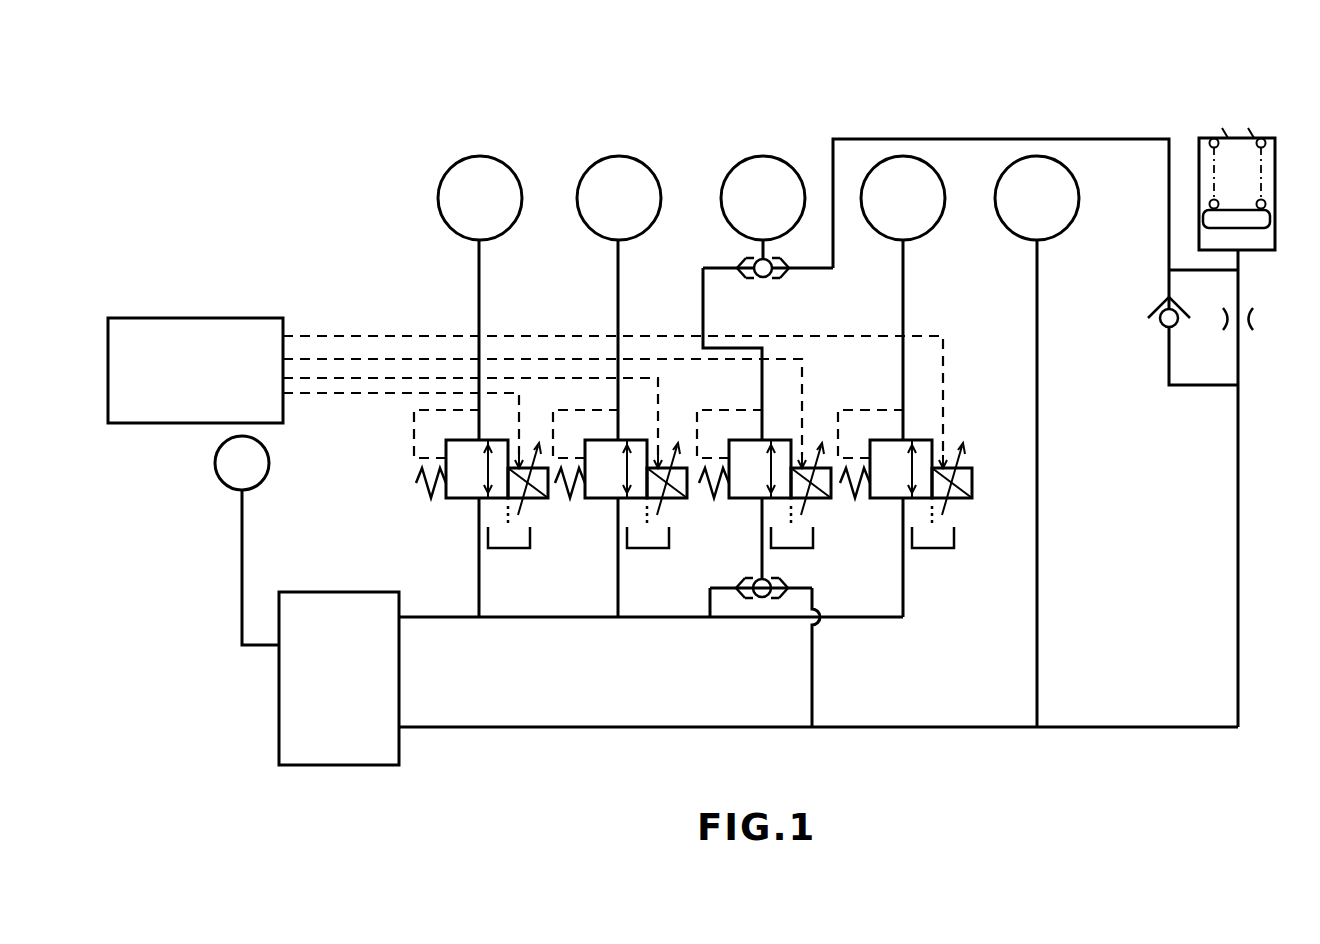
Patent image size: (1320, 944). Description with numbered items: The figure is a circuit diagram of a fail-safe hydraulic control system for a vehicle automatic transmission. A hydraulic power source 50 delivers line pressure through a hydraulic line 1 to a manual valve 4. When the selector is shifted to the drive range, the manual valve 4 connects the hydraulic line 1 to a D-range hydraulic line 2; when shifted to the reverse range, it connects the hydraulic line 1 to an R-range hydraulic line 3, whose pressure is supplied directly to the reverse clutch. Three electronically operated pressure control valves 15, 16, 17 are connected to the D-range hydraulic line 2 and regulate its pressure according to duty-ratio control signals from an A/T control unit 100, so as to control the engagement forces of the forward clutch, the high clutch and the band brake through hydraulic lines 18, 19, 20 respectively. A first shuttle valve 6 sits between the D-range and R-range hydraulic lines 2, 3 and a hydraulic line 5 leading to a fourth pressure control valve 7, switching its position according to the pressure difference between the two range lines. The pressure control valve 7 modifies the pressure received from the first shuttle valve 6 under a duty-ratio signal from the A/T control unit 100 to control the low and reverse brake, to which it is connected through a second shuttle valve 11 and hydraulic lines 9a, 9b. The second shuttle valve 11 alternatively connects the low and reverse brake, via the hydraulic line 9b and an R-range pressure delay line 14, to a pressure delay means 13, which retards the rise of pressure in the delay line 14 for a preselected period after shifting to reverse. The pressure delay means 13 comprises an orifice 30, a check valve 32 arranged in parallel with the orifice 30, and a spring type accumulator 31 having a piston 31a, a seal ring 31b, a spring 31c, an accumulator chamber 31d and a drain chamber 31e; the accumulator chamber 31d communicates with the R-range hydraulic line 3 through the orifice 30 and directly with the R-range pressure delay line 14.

The hydraulic line 1 is at (242, 536).
The D-range hydraulic line 2 is at (528, 617).
The R-range hydraulic line 3 is at (580, 727).
The manual valve 4 is at (279, 702).
The hydraulic line 5 is at (762, 562).
The first shuttle valve 6 is at (762, 602).
The pressure control valve 7 is at (732, 505).
The hydraulic line 9a is at (703, 266).
The hydraulic line 9b is at (748, 258).
The second shuttle valve 11 is at (772, 262).
The pressure delay means 13 is at (1198, 401).
The R-range pressure delay line 14 is at (1012, 139).
The pressure control valve 15 is at (458, 505).
The pressure control valve 16 is at (597, 505).
The pressure control valve 17 is at (878, 505).
The hydraulic line 18 is at (479, 278).
The hydraulic line 19 is at (618, 278).
The hydraulic line 20 is at (903, 294).
The orifice 30 is at (1248, 332).
The spring type accumulator 31 is at (1199, 150).
The piston 31a is at (1232, 208).
The seal ring 31b is at (1203, 218).
The spring 31c is at (1214, 165).
The accumulator chamber 31d is at (1210, 240).
The drain chamber 31e is at (1252, 140).
The check valve 32 is at (1160, 330).
The hydraulic power source 50 is at (270, 464).
The A/T control unit 100 is at (202, 318).